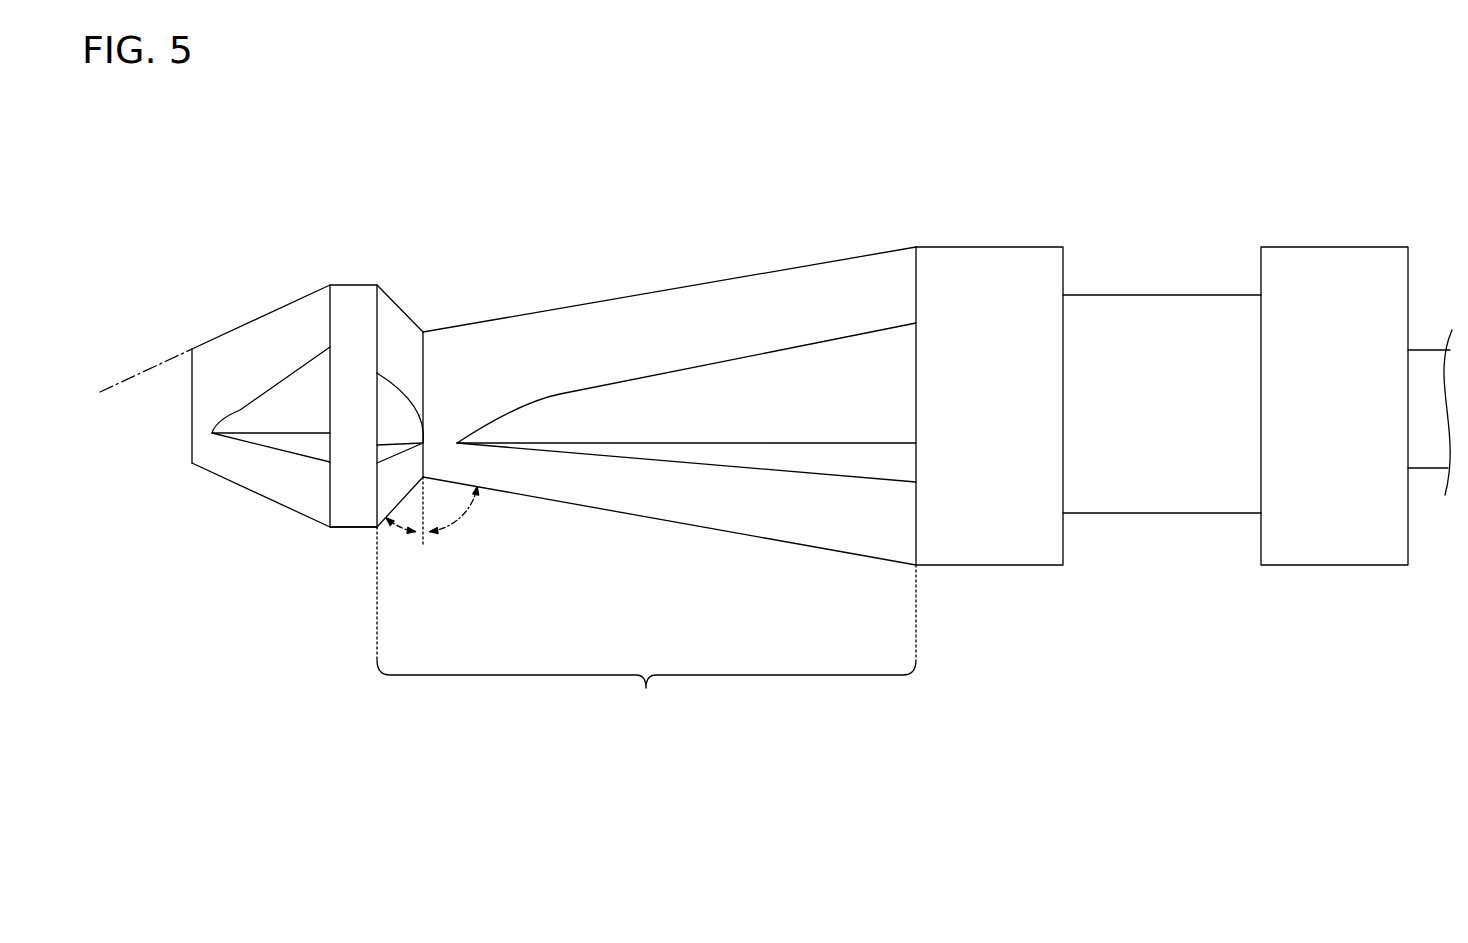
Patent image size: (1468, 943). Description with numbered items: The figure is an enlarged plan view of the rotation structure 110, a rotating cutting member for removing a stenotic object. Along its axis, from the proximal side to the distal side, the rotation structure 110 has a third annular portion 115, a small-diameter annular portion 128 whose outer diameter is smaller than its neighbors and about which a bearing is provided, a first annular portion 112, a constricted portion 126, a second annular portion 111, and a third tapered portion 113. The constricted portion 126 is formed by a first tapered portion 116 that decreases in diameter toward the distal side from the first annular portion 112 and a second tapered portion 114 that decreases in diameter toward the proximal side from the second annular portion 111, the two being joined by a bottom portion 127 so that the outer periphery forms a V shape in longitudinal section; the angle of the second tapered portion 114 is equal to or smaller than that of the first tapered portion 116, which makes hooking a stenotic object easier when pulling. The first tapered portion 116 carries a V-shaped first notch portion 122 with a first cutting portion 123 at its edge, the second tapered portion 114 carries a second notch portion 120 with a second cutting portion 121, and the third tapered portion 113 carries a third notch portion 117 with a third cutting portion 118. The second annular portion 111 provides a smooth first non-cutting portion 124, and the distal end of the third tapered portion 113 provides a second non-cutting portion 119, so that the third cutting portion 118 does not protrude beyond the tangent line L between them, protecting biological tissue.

The rotation structure 110 is at (660, 272).
The second annular portion 111 is at (347, 307).
The first annular portion 112 is at (987, 247).
The third tapered portion 113 is at (250, 342).
The second tapered portion 114 is at (390, 320).
The third annular portion 115 is at (1328, 247).
The first tapered portion 116 is at (727, 320).
The third notch portion 117 is at (235, 423).
The third cutting portion 118 is at (278, 452).
The second non-cutting portion 119 is at (202, 432).
The second notch portion 120 is at (392, 412).
The second cutting portion 121 is at (440, 450).
The first notch portion 122 is at (813, 438).
The first cutting portion 123 is at (677, 463).
The first non-cutting portion 124 is at (353, 515).
The constricted portion 126 is at (646, 621).
The bottom portion 127 is at (422, 393).
The small-diameter annular portion 128 is at (1132, 307).
The tangent line L is at (143, 370).